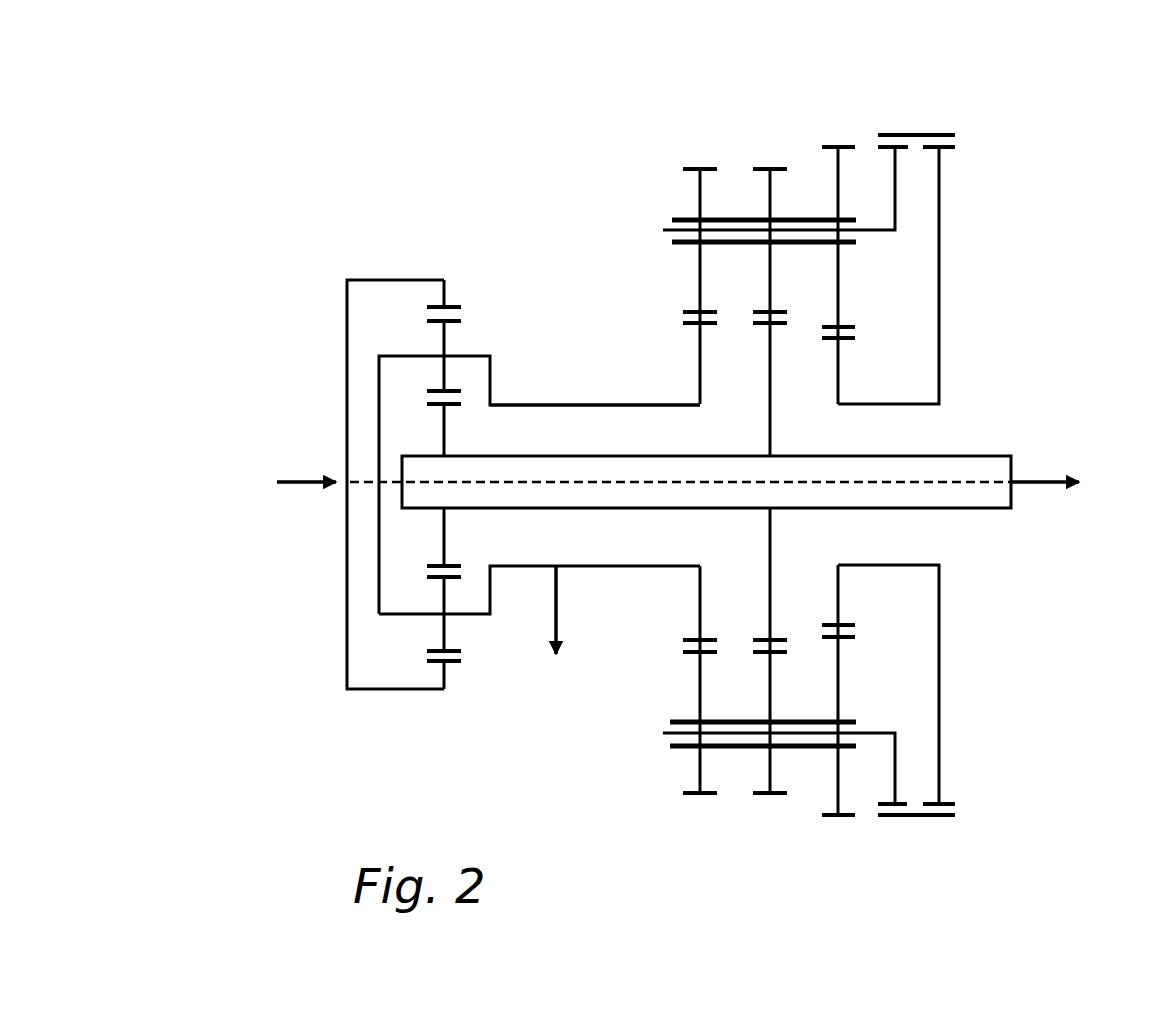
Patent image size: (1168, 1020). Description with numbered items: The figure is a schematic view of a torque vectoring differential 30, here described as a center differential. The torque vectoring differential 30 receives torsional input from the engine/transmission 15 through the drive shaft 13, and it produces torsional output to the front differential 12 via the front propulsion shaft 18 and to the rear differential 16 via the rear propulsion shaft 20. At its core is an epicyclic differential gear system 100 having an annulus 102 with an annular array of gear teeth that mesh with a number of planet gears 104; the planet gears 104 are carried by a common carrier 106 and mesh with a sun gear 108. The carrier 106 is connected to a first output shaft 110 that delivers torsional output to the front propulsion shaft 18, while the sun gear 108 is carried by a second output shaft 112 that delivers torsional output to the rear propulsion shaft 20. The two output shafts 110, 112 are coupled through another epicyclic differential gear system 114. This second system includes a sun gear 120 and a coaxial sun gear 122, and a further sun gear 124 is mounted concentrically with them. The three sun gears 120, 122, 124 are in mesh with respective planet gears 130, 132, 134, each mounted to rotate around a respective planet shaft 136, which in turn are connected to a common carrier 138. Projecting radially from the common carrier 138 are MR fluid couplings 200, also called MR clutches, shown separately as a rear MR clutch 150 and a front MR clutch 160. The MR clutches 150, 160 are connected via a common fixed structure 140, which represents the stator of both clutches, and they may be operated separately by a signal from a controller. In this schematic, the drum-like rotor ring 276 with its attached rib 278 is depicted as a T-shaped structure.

The front differential 12 is at (555, 632).
The drive shaft 13 is at (312, 482).
The engine/transmission 15 is at (254, 482).
The rear differential 16 is at (1086, 482).
The front propulsion shaft 18 is at (557, 608).
The rear propulsion shaft 20 is at (1028, 483).
The torque vectoring differential 30 is at (844, 747).
The epicyclic differential gear system 100 is at (506, 436).
The annulus 102 is at (400, 279).
The planet gears 104 is at (447, 338).
The carrier 106 is at (490, 380).
The sun gear 108 is at (446, 437).
The first output shaft 110 is at (636, 404).
The second output shaft 112 is at (973, 456).
The epicyclic differential gear system 114 is at (766, 800).
The sun gear 120 is at (698, 355).
The sun gear 122 is at (770, 415).
The sun gear 124 is at (840, 377).
The planet gear 130 is at (688, 167).
The planet gear 132 is at (762, 167).
The planet gear 134 is at (828, 146).
The planet shaft 136 is at (685, 217).
The common carrier 138 is at (877, 233).
The fixed structure 140 is at (920, 816).
The rear MR clutch 150 is at (891, 124).
The front MR clutch 160 is at (948, 124).
The MR fluid coupling 200 is at (927, 116).
The rotor ring 276 is at (905, 152).
The rib 278 is at (897, 753).